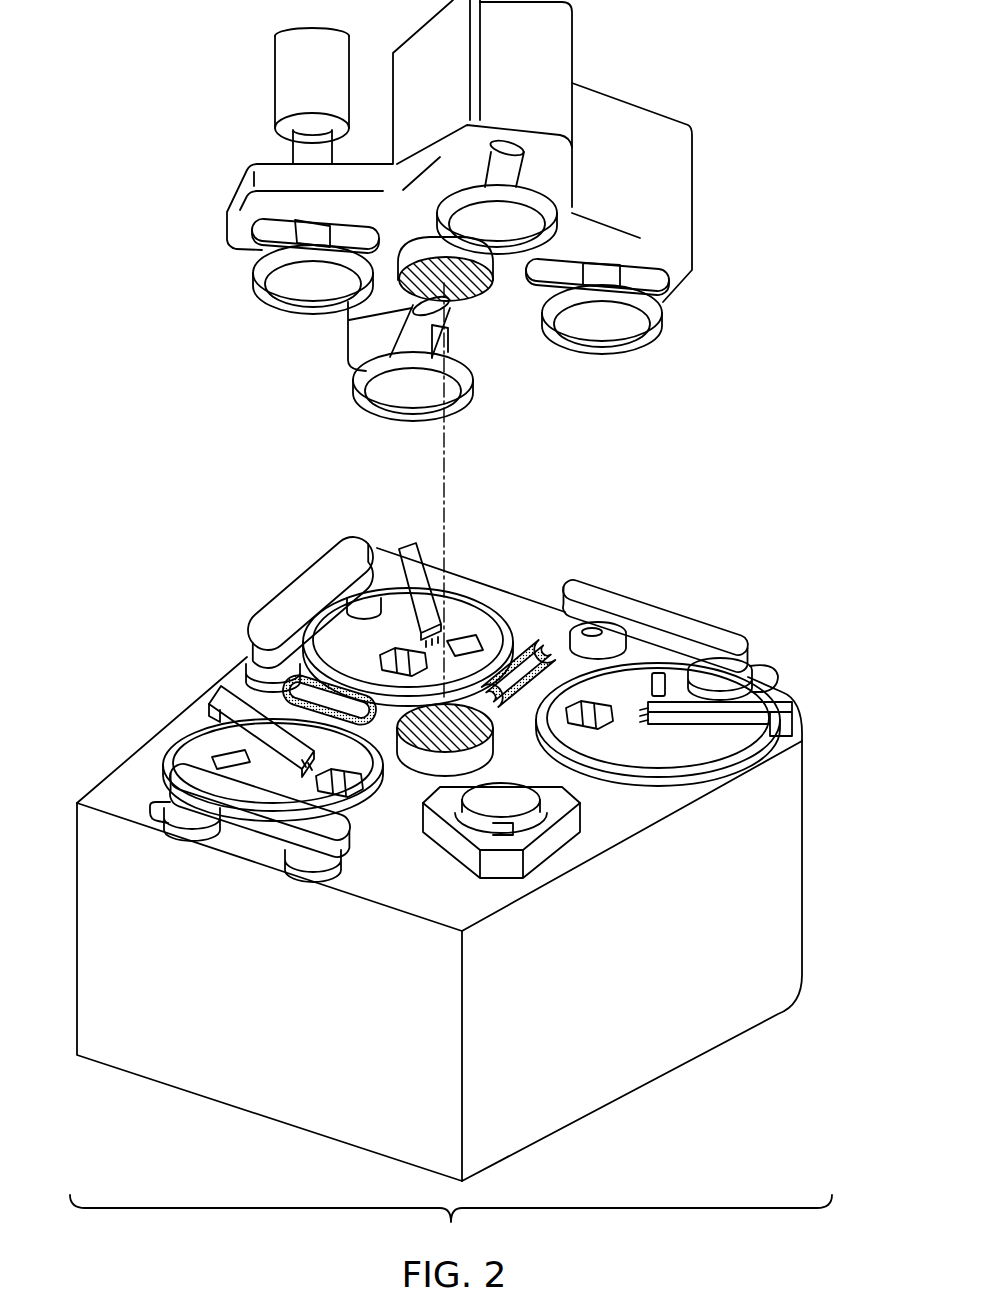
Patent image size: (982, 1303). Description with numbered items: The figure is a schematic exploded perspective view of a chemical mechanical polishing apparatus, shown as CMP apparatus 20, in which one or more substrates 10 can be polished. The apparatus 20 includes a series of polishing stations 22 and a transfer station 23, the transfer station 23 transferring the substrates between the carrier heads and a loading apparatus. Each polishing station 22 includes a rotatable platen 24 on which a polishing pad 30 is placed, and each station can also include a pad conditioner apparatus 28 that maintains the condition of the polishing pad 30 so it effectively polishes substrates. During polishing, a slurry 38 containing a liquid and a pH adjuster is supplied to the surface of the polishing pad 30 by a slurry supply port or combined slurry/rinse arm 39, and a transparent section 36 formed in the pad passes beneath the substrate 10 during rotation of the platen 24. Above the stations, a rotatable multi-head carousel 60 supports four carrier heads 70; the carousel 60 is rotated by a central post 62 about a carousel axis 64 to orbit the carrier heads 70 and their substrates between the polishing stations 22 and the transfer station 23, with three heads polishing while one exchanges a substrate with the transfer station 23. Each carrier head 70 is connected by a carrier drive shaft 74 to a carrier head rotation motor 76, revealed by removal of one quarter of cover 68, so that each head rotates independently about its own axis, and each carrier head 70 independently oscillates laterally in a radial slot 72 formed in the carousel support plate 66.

The substrate 10 is at (292, 283).
The CMP apparatus 20 is at (670, 40).
The polishing station 22 is at (512, 598).
The transfer station 23 is at (458, 877).
The rotatable platen 24 is at (468, 625).
The pad conditioner apparatus 28 is at (280, 577).
The polishing pad 30 is at (455, 608).
The transparent section 36 is at (470, 633).
The slurry 38 is at (383, 650).
The slurry/rinse arm 39 is at (410, 545).
The multi-head carousel 60 is at (722, 224).
The central post 62 is at (463, 298).
The carousel axis 64 is at (478, 461).
The carousel support plate 66 is at (227, 220).
The cover 68 is at (573, 30).
The carrier head 70 is at (257, 312).
The radial slot 72 is at (282, 220).
The carrier drive shaft 74 is at (305, 228).
The carrier head rotation motor 76 is at (276, 68).